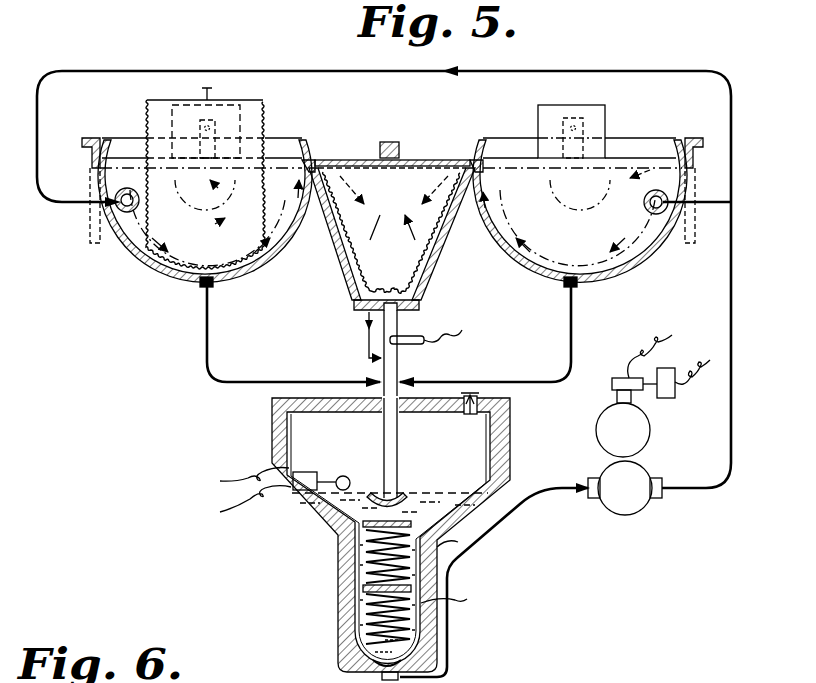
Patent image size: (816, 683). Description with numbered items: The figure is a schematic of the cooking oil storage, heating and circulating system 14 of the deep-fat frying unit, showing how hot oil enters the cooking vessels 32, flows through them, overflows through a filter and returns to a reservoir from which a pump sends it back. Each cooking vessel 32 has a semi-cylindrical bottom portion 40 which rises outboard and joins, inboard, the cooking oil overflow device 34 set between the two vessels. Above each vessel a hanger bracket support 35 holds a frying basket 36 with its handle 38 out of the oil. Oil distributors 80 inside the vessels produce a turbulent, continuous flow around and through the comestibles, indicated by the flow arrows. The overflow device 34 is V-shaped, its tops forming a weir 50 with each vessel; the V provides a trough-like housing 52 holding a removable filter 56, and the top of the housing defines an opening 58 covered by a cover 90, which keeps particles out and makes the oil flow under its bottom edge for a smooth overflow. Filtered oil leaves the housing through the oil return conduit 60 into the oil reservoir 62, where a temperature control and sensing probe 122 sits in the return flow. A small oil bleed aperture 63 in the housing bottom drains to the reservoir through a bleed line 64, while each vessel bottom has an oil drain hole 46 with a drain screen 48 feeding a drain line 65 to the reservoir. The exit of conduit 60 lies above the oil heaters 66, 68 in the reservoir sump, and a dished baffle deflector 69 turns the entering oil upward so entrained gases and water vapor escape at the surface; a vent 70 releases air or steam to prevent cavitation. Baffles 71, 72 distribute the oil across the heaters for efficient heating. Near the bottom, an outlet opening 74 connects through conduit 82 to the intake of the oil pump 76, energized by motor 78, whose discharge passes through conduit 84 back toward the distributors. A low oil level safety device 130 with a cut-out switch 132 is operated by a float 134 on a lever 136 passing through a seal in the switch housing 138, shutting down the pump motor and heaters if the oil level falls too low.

The cooking oil storage, heating and circulating system 14 is at (170, 345).
The cooking vessel 32 is at (115, 172).
The cooking oil overflow device 34 is at (338, 258).
The hanger bracket support 35 is at (243, 107).
The frying basket 36 is at (266, 120).
The handle 38 is at (214, 92).
The semi-cylindrical bottom portion 40 is at (157, 278).
The oil drain hole 46 is at (202, 284).
The drain screen 48 is at (212, 285).
The weir 50 is at (312, 166).
The trough-like housing 52 is at (352, 307).
The removable filter 56 is at (430, 236).
The opening 58 is at (436, 166).
The oil return conduit 60 is at (399, 356).
The oil reservoir 62 is at (270, 430).
The oil bleed aperture 63 is at (366, 315).
The bleed line 64 is at (367, 342).
The drain line 65 is at (217, 368).
The oil heater 66 is at (373, 527).
The oil heater 68 is at (363, 618).
The dished baffle deflector 69 is at (404, 498).
The vent 70 is at (480, 402).
The baffle 71 is at (337, 532).
The baffle 72 is at (380, 589).
The outlet opening 74 is at (376, 672).
The oil pump 76 is at (632, 507).
The motor 78 is at (640, 435).
The oil distributor 80 is at (140, 192).
The conduit 82 is at (436, 655).
The conduit 84 is at (731, 430).
The cover 90 is at (409, 158).
The temperature control and sensing probe 122 is at (416, 337).
The low oil level safety device 130 is at (368, 455).
The cut-out switch 132 is at (307, 470).
The float 134 is at (351, 482).
The float ball 136 is at (327, 480).
The switch housing 138 is at (307, 490).